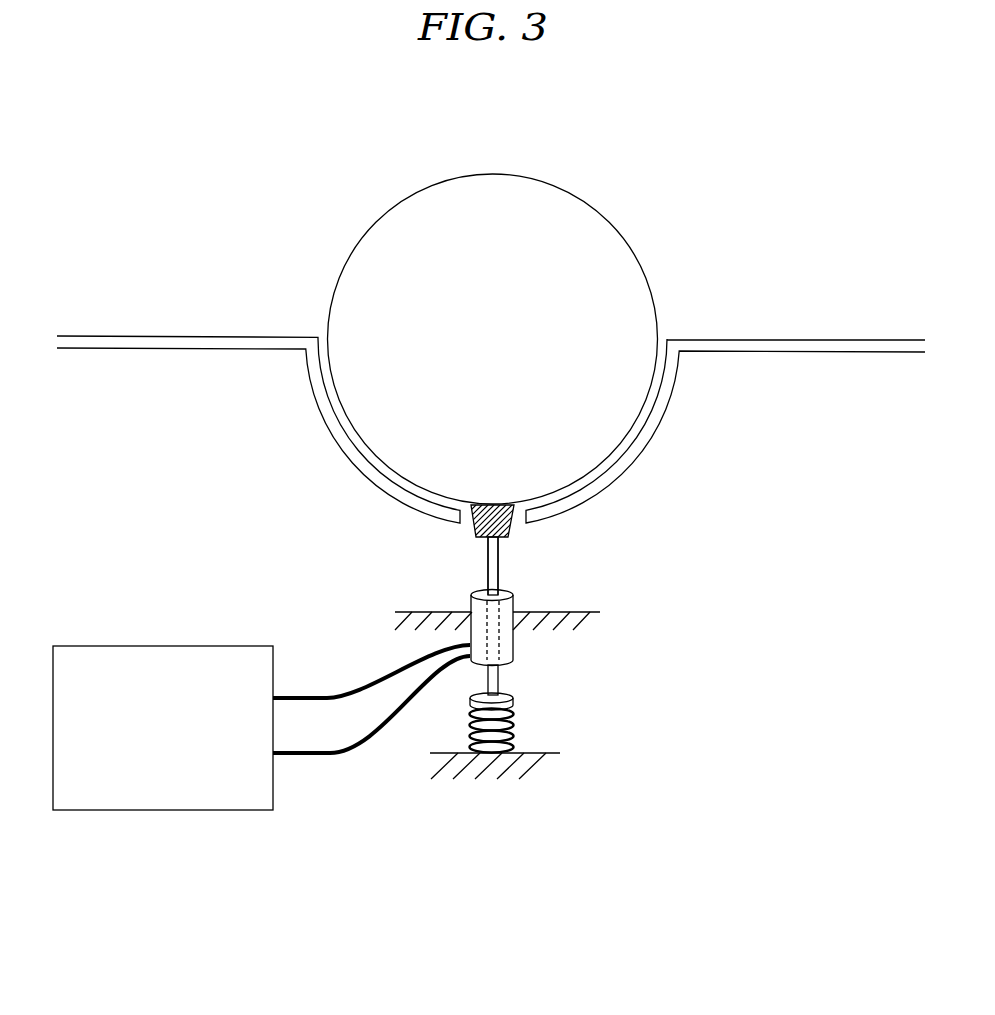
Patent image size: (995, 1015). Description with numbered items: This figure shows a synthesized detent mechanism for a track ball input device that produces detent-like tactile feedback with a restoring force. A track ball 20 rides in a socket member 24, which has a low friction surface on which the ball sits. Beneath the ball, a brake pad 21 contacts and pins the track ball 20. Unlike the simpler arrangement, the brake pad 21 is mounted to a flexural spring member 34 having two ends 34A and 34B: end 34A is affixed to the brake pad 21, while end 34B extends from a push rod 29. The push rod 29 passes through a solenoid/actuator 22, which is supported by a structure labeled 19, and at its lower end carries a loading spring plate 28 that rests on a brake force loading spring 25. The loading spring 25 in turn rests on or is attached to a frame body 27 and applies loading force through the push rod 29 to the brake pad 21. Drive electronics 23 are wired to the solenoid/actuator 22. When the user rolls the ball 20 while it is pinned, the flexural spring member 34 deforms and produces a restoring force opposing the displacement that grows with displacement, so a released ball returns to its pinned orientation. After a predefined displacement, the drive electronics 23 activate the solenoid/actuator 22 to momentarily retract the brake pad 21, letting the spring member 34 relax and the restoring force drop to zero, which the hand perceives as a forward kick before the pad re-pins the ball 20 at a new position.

The track ball 20 is at (642, 267).
The socket member 24 is at (623, 473).
The brake pad 21 is at (512, 537).
The flexural spring member 34 is at (499, 565).
The end of flexural spring member 34A is at (487, 541).
The end of flexural spring member 34B is at (489, 581).
The support 19 is at (600, 612).
The solenoid/actuator 22 is at (514, 652).
The push rod 29 is at (500, 685).
The loading spring plate 28 is at (514, 707).
The brake force loading spring 25 is at (515, 742).
The frame body 27 is at (500, 783).
The drive electronics 23 is at (163, 810).